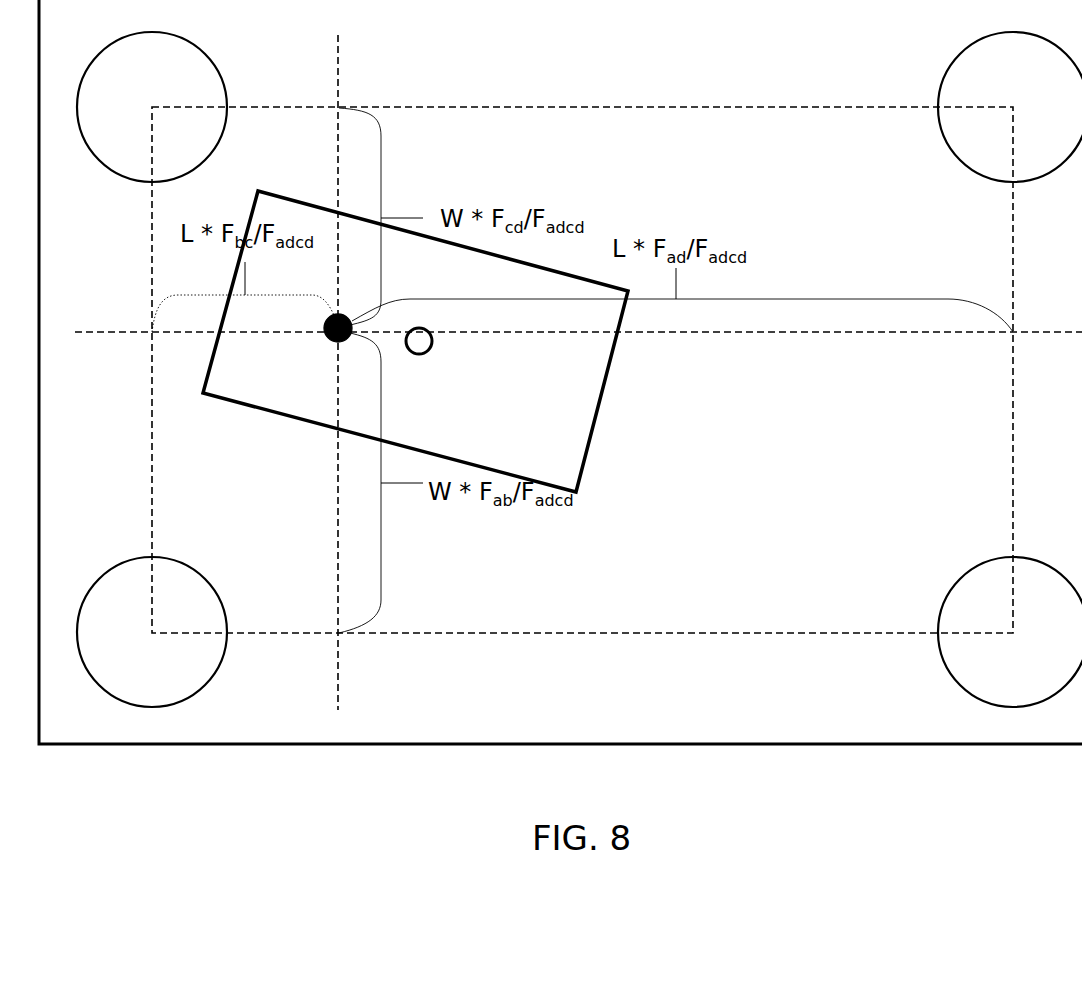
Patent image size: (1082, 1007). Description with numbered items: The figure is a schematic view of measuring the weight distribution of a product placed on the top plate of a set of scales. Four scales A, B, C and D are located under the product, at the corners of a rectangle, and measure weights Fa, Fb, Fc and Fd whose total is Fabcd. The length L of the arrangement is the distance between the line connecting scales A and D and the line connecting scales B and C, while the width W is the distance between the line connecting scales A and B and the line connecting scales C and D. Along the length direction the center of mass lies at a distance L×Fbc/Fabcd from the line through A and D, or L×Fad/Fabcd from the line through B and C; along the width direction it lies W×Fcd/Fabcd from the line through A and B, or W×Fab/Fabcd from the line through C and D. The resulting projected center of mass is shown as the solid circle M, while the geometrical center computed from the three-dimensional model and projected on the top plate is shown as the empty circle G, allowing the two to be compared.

The scale A is at (152, 107).
The scale B is at (1010, 107).
The scale C is at (1010, 632).
The scale D is at (152, 632).
The center of mass projection M is at (328, 338).
The geometrical center projection G is at (432, 357).